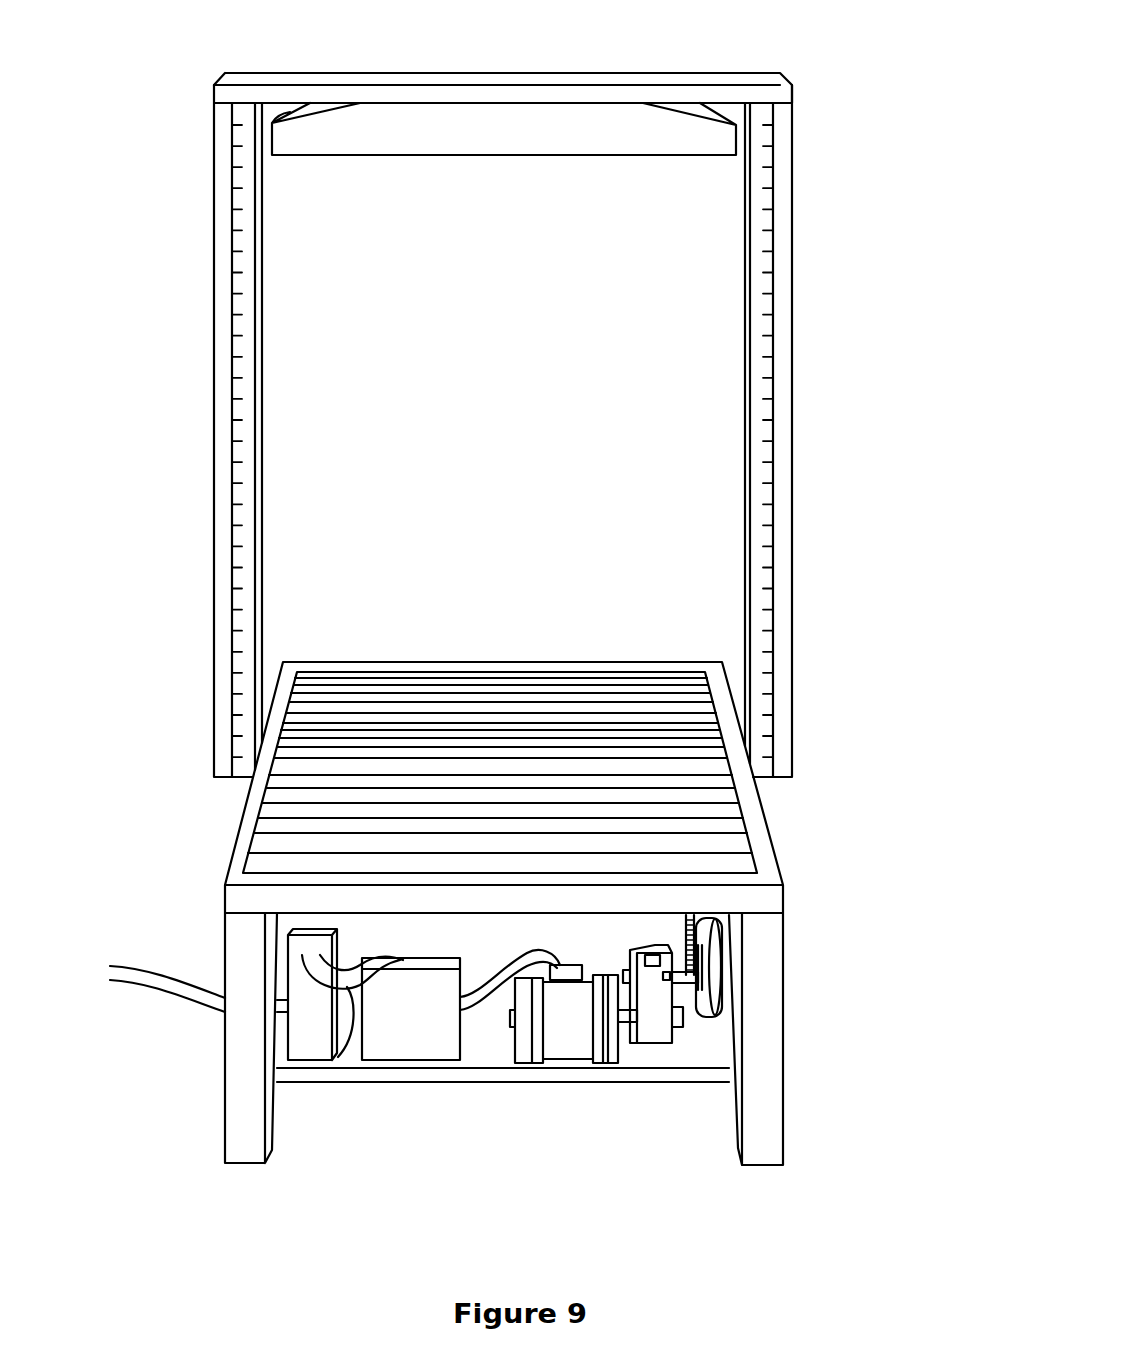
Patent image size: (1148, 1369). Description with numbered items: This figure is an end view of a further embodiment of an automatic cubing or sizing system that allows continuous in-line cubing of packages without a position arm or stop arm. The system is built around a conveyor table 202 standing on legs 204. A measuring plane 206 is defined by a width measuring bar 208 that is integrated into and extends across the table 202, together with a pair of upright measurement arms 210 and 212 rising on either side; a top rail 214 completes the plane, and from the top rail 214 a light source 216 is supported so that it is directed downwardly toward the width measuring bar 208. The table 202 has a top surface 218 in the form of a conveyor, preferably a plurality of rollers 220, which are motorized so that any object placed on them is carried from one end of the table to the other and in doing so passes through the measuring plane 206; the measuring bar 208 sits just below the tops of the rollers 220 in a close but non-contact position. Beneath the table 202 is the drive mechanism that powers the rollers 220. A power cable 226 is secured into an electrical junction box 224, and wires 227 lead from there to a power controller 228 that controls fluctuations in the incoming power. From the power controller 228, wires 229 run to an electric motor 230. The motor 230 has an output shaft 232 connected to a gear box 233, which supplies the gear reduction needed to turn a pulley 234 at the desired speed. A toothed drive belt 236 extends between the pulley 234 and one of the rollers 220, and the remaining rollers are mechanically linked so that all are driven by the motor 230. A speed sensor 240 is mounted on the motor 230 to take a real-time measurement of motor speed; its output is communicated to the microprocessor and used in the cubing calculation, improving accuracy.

The conveyor table 202 is at (767, 902).
The legs 204 is at (248, 1148).
The measuring plane 206 is at (530, 397).
The width measuring bar 208 is at (710, 755).
The upright measurement arm 210 is at (785, 478).
The upright measurement arm 212 is at (226, 463).
The top rail 214 is at (717, 90).
The light source 216 is at (492, 132).
The top surface 218 is at (292, 842).
The rollers 220 is at (442, 723).
The electrical junction box 224 is at (312, 1040).
The power cable 226 is at (190, 1002).
The wires 227 is at (337, 1047).
The power controller 228 is at (435, 1029).
The wires 229 is at (490, 1003).
The electric motor 230 is at (562, 1045).
The output shaft 232 is at (627, 1043).
The gear box 233 is at (665, 1032).
The pulley 234 is at (725, 983).
The toothed drive belt 236 is at (718, 927).
The speed sensor 240 is at (653, 967).